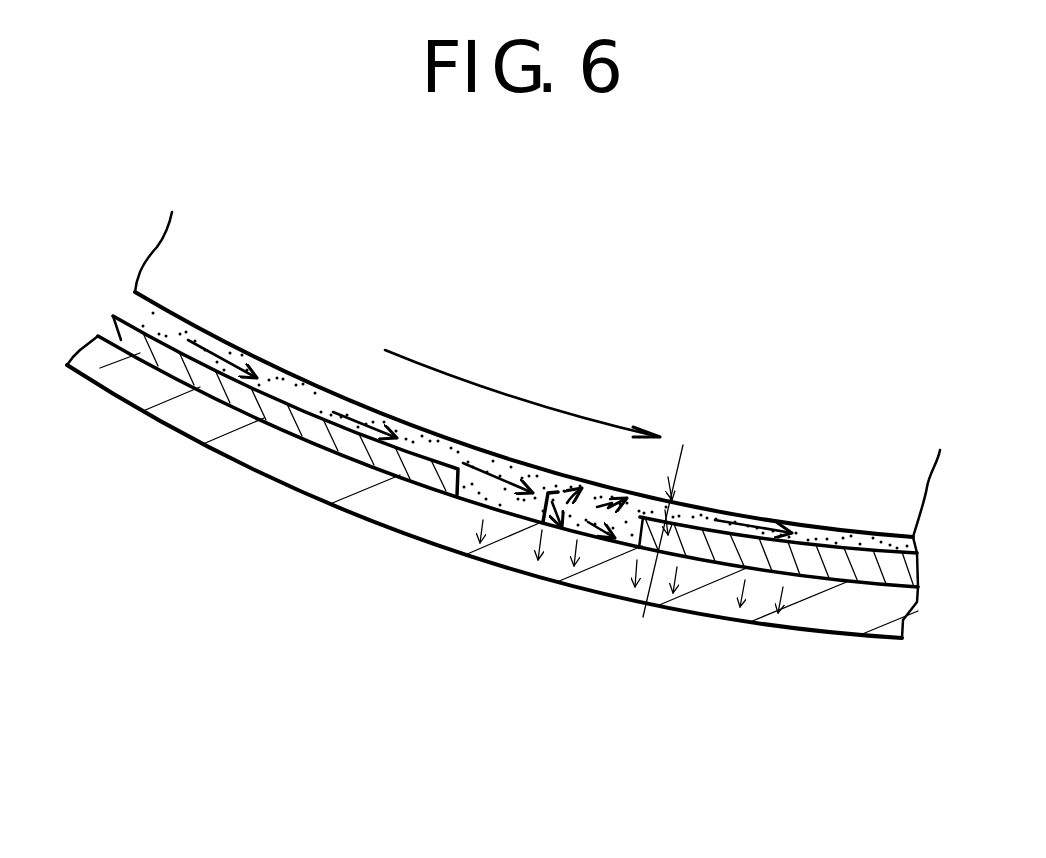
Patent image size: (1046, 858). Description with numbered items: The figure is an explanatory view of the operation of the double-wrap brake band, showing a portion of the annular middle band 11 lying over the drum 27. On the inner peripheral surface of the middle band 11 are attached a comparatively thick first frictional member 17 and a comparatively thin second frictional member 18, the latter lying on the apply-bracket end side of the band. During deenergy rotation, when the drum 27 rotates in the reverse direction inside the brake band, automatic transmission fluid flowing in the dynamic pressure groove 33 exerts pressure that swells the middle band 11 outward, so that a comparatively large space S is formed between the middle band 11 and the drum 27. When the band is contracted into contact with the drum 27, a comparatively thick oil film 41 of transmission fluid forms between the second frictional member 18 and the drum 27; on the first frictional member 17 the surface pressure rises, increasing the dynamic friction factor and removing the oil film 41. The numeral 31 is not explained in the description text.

The middle band 11 is at (390, 527).
The first frictional member 17 is at (818, 567).
The second frictional member 18 is at (178, 365).
The drum 27 is at (650, 253).
The recess 31 is at (483, 483).
The dynamic pressure groove 33 is at (578, 510).
The oil film 41 is at (307, 397).
The space S is at (678, 513).